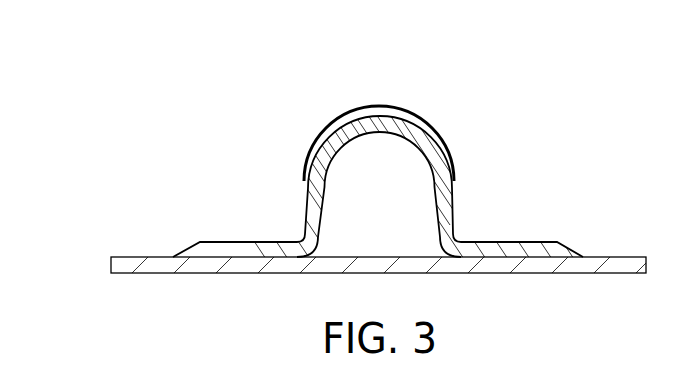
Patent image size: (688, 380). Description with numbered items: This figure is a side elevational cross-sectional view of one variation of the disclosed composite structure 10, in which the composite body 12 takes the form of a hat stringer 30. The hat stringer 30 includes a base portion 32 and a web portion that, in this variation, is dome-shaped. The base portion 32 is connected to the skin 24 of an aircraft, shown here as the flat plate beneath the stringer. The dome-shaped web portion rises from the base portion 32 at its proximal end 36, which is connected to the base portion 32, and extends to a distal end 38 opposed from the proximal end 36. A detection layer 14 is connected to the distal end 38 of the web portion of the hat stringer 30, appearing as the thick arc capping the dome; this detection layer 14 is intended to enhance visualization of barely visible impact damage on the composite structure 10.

The composite structure 10 is at (560, 137).
The composite body 12 is at (457, 213).
The detection layer 14 is at (380, 107).
The skin 24 is at (616, 257).
The hat stringer 30 is at (262, 182).
The base portion 32 is at (210, 242).
The proximal end 36 is at (288, 232).
The distal end 38 is at (312, 119).